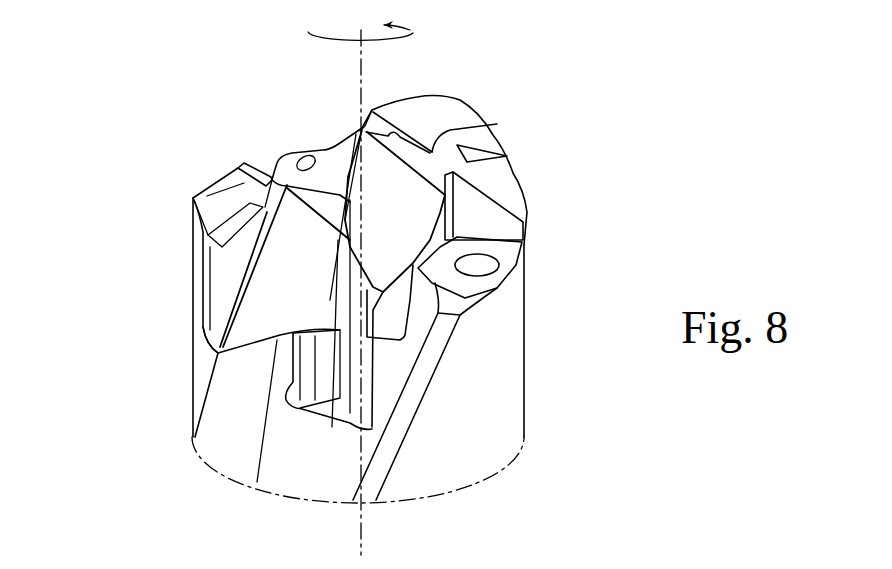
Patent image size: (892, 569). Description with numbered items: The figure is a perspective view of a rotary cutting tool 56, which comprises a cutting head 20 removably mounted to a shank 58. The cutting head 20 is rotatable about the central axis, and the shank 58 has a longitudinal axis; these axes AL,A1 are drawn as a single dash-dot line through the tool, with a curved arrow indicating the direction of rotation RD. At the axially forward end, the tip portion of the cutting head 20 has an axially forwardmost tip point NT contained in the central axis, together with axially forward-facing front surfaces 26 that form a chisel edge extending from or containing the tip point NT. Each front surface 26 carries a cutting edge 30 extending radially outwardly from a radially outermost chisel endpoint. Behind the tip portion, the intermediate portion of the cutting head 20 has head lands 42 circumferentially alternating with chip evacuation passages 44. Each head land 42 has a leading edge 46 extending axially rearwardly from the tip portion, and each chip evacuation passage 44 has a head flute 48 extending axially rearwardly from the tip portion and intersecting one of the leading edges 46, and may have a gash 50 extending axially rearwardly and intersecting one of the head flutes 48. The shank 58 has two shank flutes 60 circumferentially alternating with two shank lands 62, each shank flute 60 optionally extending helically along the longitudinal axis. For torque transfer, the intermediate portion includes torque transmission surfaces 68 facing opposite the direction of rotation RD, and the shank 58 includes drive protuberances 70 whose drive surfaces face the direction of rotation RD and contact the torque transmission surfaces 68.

The cutting head 20 is at (165, 232).
The front surface 26 is at (436, 108).
The cutting edge 30 is at (422, 86).
The head land 42 is at (245, 283).
The chip evacuation passage 44 is at (279, 269).
The leading edge 46 is at (240, 313).
The head flute 48 is at (259, 232).
The gash 50 is at (387, 215).
The rotary cutting tool 56 is at (535, 154).
The shank 58 is at (151, 386).
The shank flute 60 is at (314, 406).
The shank land 62 is at (425, 391).
The torque transmission surface 68 is at (484, 206).
The drive protuberance 70 is at (510, 250).
The tip point NT is at (361, 128).
The direction of rotation RD is at (375, 21).
The longitudinal axis and central axis AL,A1 is at (330, 279).